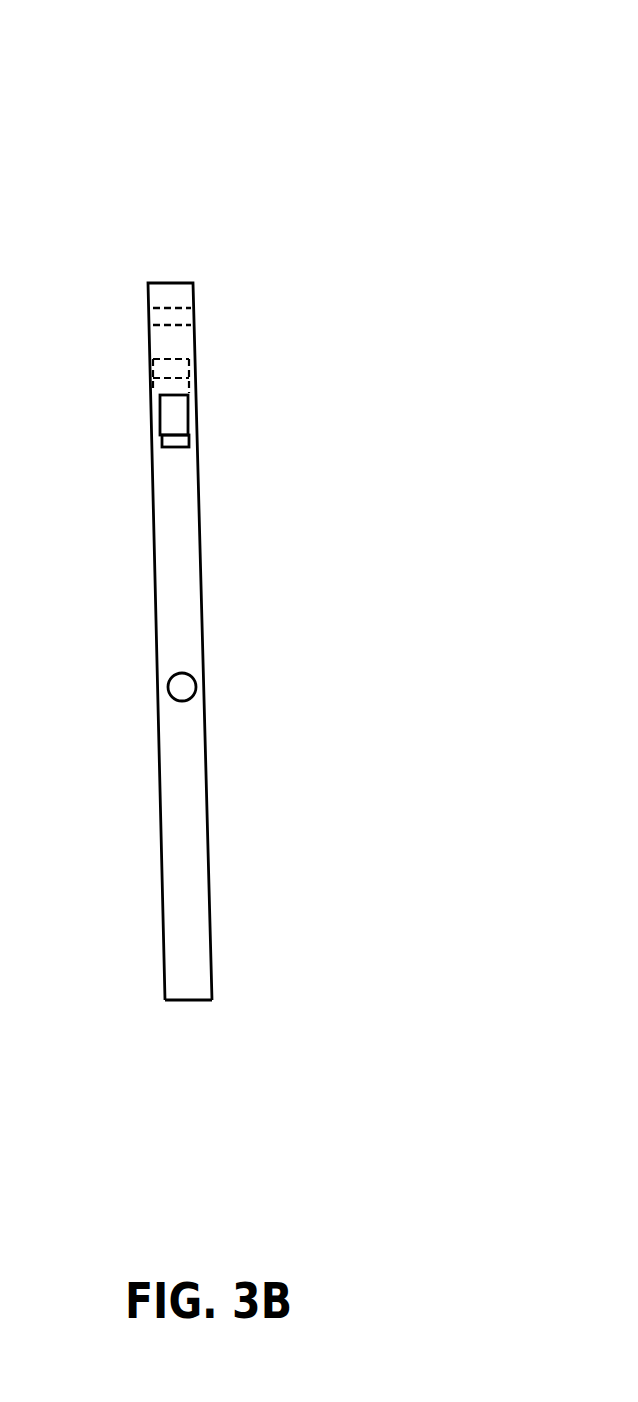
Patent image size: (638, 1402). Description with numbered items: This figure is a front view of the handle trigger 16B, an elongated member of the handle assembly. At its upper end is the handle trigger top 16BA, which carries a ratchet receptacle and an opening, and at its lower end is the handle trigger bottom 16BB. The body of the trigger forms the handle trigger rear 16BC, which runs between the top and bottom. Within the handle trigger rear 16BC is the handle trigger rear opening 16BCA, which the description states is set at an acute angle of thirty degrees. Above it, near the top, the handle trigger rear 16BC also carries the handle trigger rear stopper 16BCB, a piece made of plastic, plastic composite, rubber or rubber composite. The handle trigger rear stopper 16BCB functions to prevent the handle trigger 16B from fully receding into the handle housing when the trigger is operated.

The handle trigger 16B is at (196, 33).
The handle trigger top 16BA is at (170, 323).
The handle trigger bottom 16BB is at (185, 1002).
The handle trigger rear 16BC is at (183, 782).
The handle trigger rear opening 16BCA is at (182, 688).
The handle trigger rear stopper 16BCB is at (173, 420).